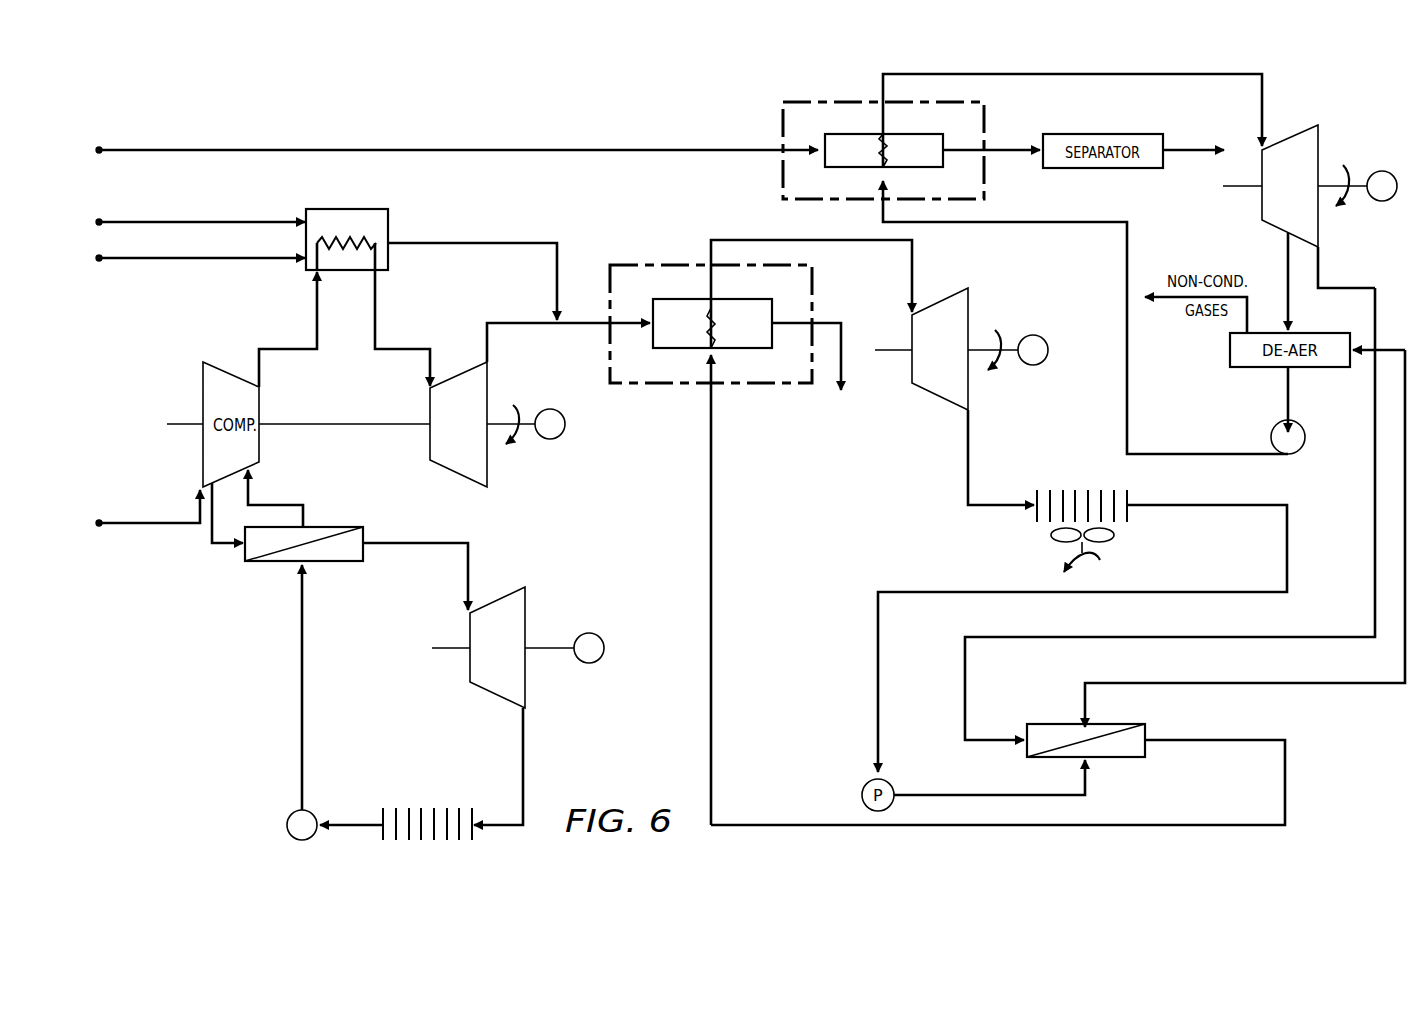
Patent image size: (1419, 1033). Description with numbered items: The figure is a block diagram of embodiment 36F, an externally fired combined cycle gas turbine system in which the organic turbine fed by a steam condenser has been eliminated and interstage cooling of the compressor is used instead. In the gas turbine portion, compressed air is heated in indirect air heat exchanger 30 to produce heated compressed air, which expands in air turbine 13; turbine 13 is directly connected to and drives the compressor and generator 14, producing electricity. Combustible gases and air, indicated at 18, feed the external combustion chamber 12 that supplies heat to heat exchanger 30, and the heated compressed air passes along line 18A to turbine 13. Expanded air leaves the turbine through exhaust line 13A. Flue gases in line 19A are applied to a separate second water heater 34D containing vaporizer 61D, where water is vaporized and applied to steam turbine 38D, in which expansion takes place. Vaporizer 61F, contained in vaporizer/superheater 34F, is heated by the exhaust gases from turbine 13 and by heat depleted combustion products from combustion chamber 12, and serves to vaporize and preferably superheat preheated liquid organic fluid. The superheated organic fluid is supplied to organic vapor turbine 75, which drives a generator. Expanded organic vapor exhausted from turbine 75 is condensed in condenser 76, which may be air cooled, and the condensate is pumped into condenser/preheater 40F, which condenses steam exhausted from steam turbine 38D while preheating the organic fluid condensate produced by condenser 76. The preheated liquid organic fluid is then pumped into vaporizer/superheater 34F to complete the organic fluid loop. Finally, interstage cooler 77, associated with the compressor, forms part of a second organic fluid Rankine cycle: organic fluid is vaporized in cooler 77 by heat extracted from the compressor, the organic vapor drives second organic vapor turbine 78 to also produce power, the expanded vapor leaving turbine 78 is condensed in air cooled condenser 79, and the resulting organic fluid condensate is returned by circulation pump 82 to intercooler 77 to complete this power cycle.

The flue gas line 19A is at (517, 147).
The combustible gases and air supply lines 18 is at (102, 226).
The indirect air heat exchanger 30 is at (386, 245).
The external combustion chamber 12 is at (346, 271).
The heated air line 18A is at (517, 242).
The exhaust line 13A is at (517, 322).
The air turbine 13 is at (458, 372).
The generator 14 is at (550, 407).
The interstage cooler 77 is at (337, 527).
The second organic vapor turbine 78 is at (510, 597).
The circulation pump 82 is at (313, 814).
The condenser 79 is at (435, 807).
The embodiment 36F is at (638, 466).
The vaporizer/superheater 34F is at (812, 268).
The vaporizer 61F is at (735, 299).
The second water heater 34D is at (984, 105).
The vaporizer 61D is at (905, 134).
The steam turbine 38D is at (1318, 124).
The organic vapor turbine 75 is at (960, 290).
The condenser 76 is at (1035, 514).
The condenser/preheater 40F is at (1110, 724).